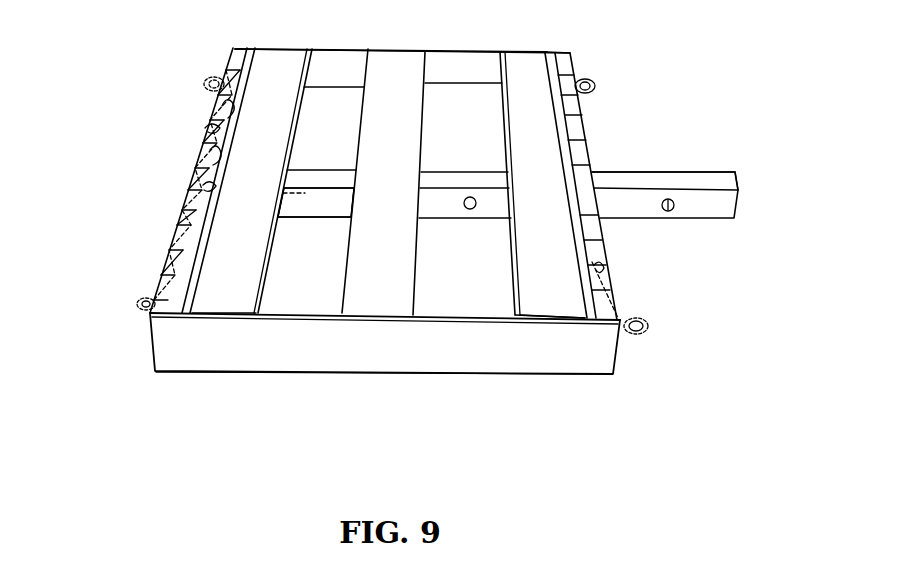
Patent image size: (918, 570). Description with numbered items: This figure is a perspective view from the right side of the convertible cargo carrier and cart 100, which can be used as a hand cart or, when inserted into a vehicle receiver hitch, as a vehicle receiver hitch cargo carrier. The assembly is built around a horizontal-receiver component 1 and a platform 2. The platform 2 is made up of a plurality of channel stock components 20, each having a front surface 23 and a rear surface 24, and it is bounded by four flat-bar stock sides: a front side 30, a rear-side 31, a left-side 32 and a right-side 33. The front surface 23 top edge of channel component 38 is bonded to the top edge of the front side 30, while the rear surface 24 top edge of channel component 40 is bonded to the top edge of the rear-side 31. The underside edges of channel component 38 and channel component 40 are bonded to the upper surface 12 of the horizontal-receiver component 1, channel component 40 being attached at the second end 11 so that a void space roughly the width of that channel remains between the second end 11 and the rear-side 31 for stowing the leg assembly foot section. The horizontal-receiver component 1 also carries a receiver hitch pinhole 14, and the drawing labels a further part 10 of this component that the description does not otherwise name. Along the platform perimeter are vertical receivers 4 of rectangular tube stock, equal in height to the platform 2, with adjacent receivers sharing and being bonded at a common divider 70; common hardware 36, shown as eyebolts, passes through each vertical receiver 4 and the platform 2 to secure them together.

The convertible cargo carrier and cart 100 is at (318, 419).
The platform 2 is at (378, 373).
The right-side 33 is at (473, 360).
The left-side 32 is at (462, 62).
The rear-side 31 is at (187, 243).
The common divider 70 is at (210, 132).
The vertical receivers 4 is at (227, 123).
The rear surface 24 is at (217, 210).
The channel component 40 is at (222, 278).
The channel stock components 20 is at (363, 107).
The second end 11 is at (283, 215).
The front surface 23 is at (572, 245).
The channel component 38 is at (550, 281).
The front side 30 is at (600, 266).
The common hardware 36 is at (648, 330).
The horizontal-receiver component 1 is at (718, 220).
The hitch tongue 10 is at (737, 178).
The upper surface 12 is at (693, 180).
The receiver hitch pinhole 14 is at (668, 199).